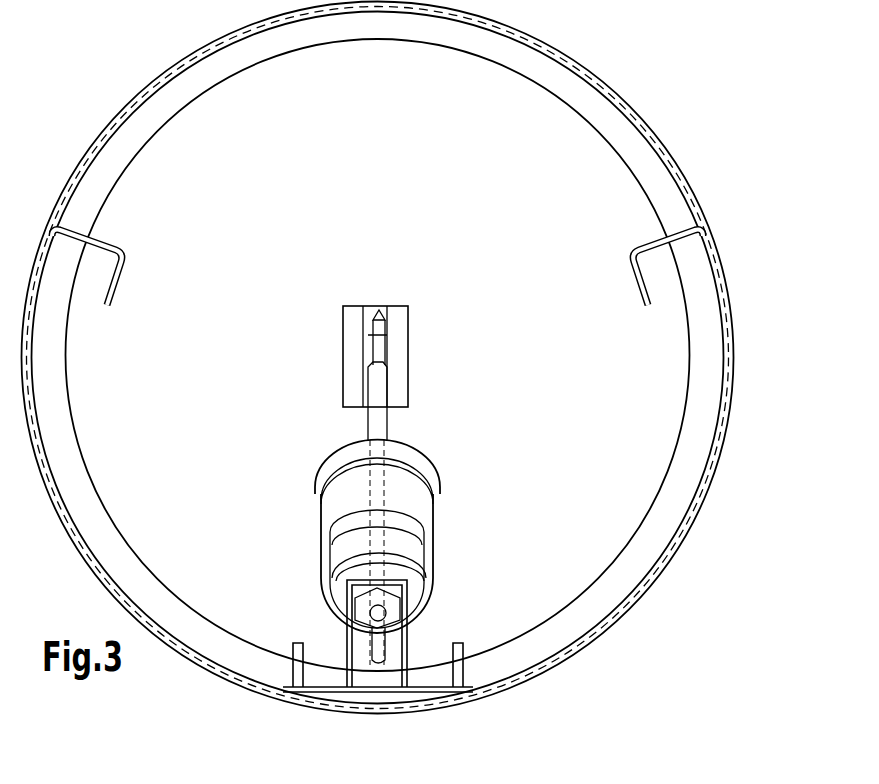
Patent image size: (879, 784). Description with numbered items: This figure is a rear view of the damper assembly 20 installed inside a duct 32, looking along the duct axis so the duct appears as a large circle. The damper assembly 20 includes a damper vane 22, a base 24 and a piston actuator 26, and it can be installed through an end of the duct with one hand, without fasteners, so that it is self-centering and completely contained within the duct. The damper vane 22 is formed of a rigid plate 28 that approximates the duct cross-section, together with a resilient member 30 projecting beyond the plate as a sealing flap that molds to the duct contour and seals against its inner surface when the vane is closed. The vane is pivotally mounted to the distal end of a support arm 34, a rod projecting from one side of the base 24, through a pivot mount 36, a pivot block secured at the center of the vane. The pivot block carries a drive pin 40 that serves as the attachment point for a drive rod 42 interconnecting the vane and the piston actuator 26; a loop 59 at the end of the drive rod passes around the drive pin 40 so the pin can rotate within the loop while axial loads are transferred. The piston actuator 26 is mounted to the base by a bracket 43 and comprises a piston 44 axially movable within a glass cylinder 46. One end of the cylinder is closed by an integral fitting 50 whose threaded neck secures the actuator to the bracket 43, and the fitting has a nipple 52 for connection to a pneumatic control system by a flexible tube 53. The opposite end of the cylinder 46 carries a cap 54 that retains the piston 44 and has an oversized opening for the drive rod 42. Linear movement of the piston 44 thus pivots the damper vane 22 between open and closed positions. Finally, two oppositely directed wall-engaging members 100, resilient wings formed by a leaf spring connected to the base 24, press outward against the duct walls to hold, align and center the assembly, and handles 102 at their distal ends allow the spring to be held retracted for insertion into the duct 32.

The damper assembly 20 is at (687, 116).
The damper vane 22 is at (647, 499).
The base 24 is at (463, 667).
The piston actuator 26 is at (304, 538).
The rigid plate 28 is at (658, 392).
The resilient member 30 is at (690, 450).
The duct 32 is at (695, 192).
The support arm 34 is at (383, 423).
The pivot mount 36 is at (397, 332).
The drive pin 40 is at (382, 308).
The drive rod 42 is at (377, 398).
The bracket 43 is at (400, 652).
The piston 44 is at (410, 528).
The cylinder 46 is at (430, 572).
The fitting 50 is at (340, 603).
The nipple 52 is at (367, 630).
The flexible tube 53 is at (380, 652).
The cap 54 is at (417, 465).
The loop 59 is at (375, 313).
The wall-engaging members 100 is at (725, 311).
The handles 102 is at (118, 288).